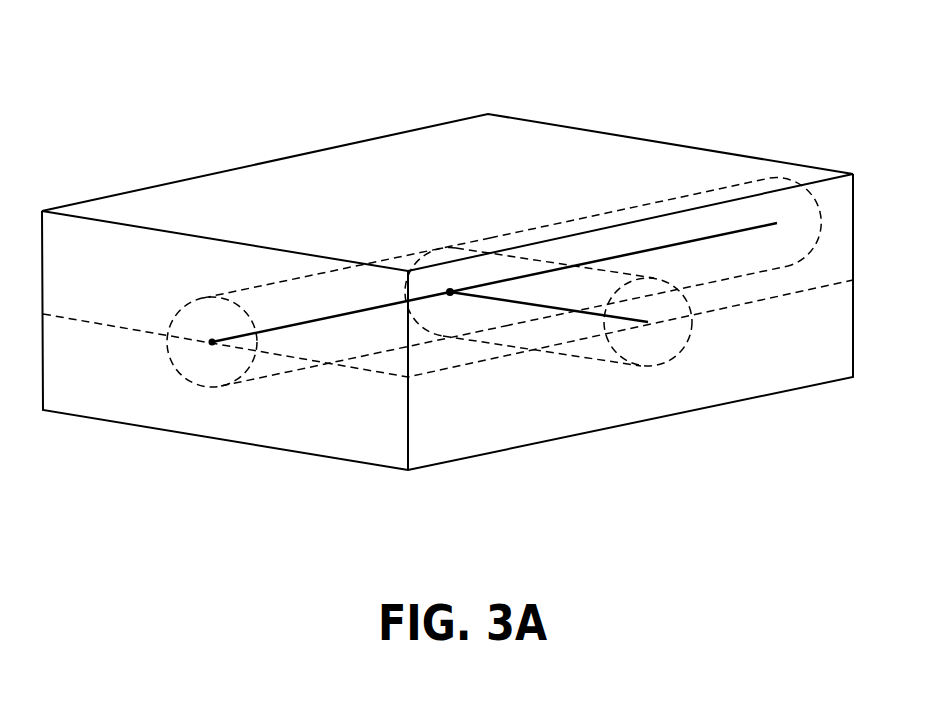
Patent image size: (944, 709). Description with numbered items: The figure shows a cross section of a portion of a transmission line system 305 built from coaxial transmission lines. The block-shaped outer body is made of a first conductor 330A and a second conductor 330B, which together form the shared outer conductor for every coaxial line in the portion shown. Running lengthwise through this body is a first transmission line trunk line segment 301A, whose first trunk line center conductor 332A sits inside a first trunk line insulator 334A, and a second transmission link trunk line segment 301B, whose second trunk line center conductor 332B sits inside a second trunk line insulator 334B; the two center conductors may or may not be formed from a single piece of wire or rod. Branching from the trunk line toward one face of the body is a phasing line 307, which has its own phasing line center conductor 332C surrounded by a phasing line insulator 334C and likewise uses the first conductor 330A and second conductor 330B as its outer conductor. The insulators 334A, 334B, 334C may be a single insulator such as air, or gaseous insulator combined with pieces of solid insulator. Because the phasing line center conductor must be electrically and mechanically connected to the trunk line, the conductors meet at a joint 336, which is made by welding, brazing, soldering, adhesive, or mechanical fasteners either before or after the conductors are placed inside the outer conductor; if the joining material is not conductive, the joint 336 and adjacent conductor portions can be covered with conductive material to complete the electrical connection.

The transmission line system 305 is at (480, 39).
The first conductor 330A is at (103, 259).
The second conductor 330B is at (103, 392).
The first transmission line trunk line segment 301A is at (312, 383).
The second transmission link trunk line segment 301B is at (723, 293).
The phasing line 307 is at (576, 377).
The first trunk line center conductor 332A is at (275, 328).
The second trunk line center conductor 332B is at (658, 247).
The phasing line center conductor 332C is at (516, 303).
The first trunk line insulator 334A is at (348, 293).
The second trunk line insulator 334B is at (743, 216).
The phasing line insulator 334C is at (577, 293).
The joint 336 is at (450, 288).